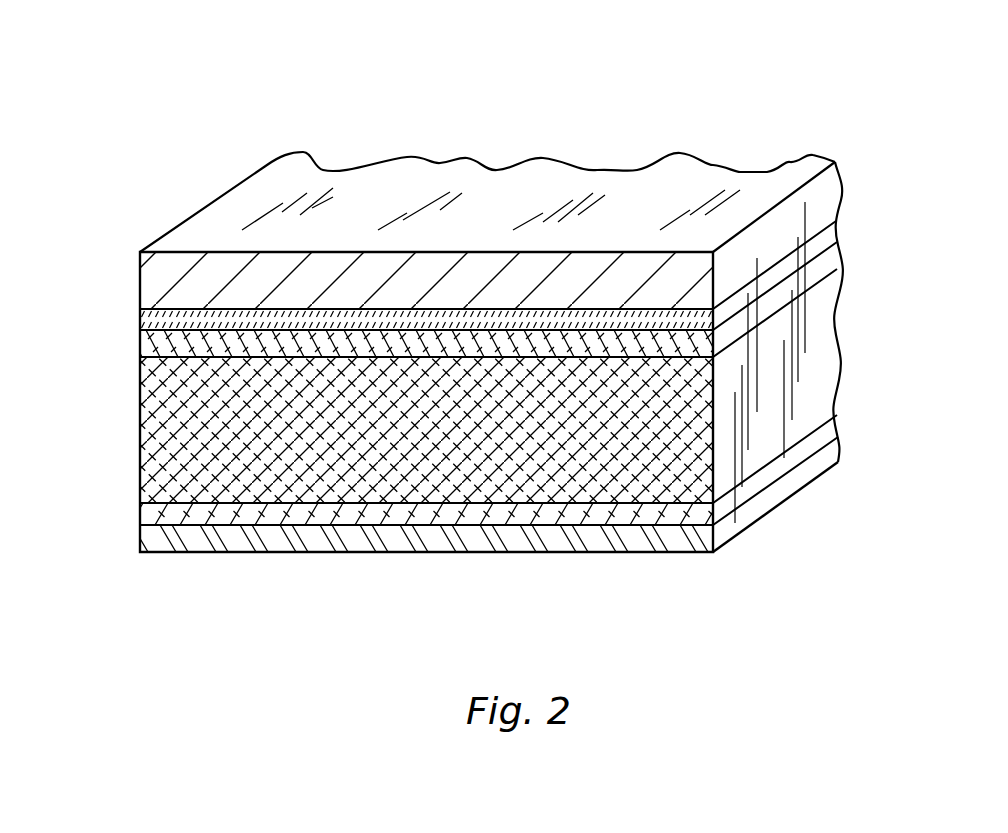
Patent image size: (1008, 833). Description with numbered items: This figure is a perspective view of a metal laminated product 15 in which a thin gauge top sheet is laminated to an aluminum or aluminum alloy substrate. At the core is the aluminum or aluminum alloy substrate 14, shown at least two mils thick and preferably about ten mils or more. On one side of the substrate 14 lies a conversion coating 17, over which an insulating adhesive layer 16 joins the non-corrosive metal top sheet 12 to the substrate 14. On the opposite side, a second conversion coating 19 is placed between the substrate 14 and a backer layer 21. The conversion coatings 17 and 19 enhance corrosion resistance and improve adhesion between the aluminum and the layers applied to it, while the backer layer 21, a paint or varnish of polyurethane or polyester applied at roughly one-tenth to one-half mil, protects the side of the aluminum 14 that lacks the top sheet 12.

The metal laminated product 15 is at (515, 93).
The non-corrosive metal top sheet 12 is at (838, 193).
The adhesive layer 16 is at (838, 228).
The conversion coating 17 is at (138, 343).
The aluminum or aluminum alloy substrate 14 is at (838, 348).
The conversion coating 19 is at (138, 513).
The backer layer 21 is at (838, 447).